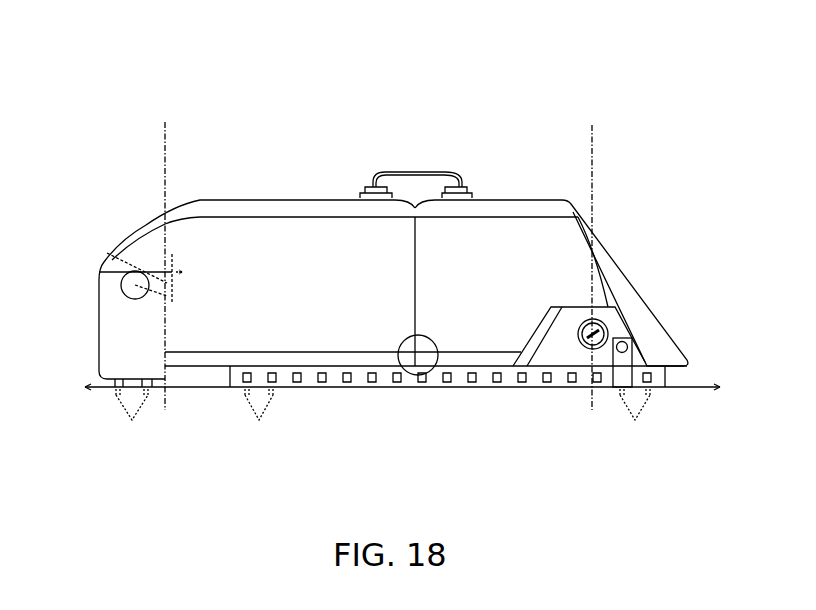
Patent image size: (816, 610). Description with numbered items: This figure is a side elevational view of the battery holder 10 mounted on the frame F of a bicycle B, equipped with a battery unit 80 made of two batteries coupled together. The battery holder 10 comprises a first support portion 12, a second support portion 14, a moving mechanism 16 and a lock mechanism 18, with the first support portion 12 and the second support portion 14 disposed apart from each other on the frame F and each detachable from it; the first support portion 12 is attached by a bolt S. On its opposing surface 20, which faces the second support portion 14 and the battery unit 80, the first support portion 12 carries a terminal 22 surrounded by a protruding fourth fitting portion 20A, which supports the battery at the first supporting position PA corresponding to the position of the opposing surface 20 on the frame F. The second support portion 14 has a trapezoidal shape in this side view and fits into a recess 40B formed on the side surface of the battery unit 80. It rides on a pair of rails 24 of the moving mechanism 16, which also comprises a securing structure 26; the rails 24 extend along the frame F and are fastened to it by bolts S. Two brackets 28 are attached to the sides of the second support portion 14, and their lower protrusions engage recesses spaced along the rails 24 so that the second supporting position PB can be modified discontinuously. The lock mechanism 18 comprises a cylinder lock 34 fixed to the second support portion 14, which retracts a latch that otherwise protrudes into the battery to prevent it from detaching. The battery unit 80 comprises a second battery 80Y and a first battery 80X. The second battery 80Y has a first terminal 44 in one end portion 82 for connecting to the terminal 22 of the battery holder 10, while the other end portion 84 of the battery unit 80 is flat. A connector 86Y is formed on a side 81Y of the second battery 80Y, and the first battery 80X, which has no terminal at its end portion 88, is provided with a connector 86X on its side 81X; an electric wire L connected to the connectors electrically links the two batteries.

The battery holder 10 is at (122, 171).
The first support portion 12 is at (119, 233).
The second support portion 14 is at (573, 306).
The moving mechanism 16 is at (480, 445).
The lock mechanism 18 is at (547, 445).
The opposing surface 20 is at (180, 376).
The fourth fitting portion 20A is at (172, 254).
The terminal 22 is at (172, 300).
The rails 24 is at (488, 391).
The securing structure 26 is at (598, 445).
The brackets 28 is at (615, 387).
The cylinder lock 34 is at (580, 350).
The recess 40B is at (552, 326).
The first terminal 44 is at (112, 258).
The battery unit 80 is at (412, 227).
The first battery 80X is at (525, 199).
The second battery 80Y is at (290, 199).
The side 81X is at (568, 199).
The side 81Y is at (222, 199).
The end portion 82 is at (157, 208).
The other end portion 84 is at (433, 373).
The connector 86X is at (458, 186).
The connector 86Y is at (370, 186).
The end portion 88 is at (405, 373).
The bicycle B is at (697, 330).
The frame F is at (700, 386).
The electric wire L is at (418, 170).
The first supporting position PA is at (162, 255).
The second supporting position PB is at (590, 256).
The bolt S is at (383, 418).